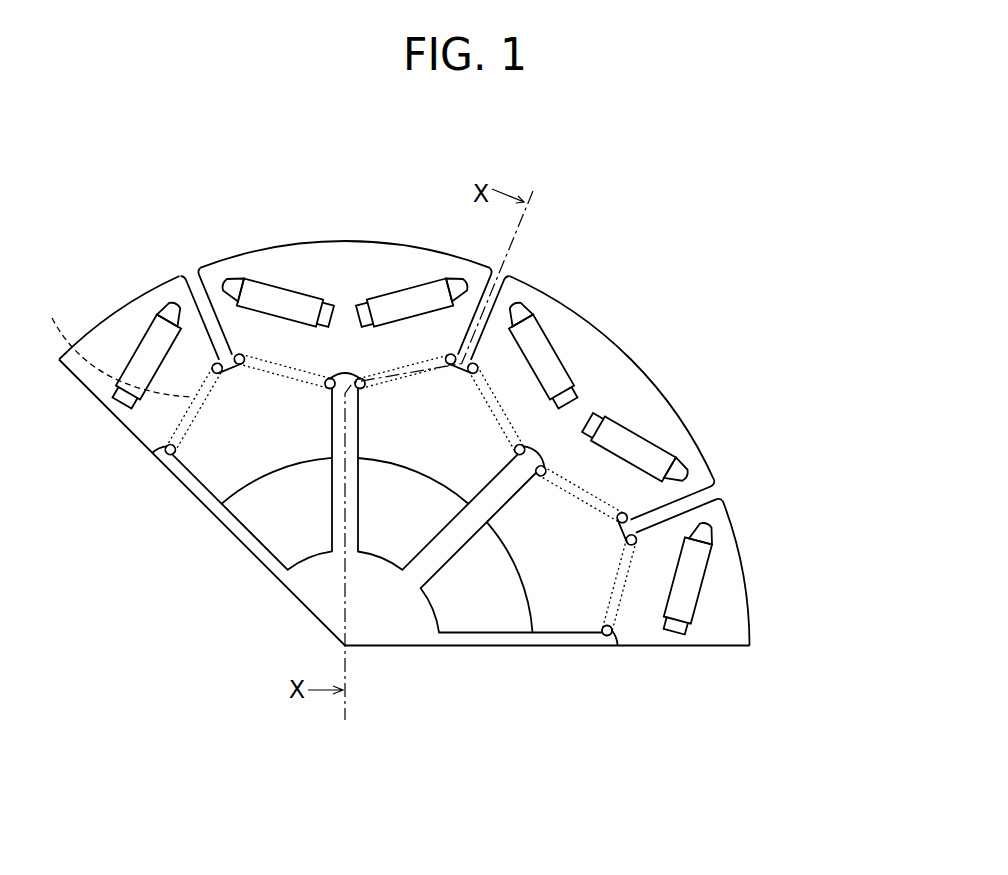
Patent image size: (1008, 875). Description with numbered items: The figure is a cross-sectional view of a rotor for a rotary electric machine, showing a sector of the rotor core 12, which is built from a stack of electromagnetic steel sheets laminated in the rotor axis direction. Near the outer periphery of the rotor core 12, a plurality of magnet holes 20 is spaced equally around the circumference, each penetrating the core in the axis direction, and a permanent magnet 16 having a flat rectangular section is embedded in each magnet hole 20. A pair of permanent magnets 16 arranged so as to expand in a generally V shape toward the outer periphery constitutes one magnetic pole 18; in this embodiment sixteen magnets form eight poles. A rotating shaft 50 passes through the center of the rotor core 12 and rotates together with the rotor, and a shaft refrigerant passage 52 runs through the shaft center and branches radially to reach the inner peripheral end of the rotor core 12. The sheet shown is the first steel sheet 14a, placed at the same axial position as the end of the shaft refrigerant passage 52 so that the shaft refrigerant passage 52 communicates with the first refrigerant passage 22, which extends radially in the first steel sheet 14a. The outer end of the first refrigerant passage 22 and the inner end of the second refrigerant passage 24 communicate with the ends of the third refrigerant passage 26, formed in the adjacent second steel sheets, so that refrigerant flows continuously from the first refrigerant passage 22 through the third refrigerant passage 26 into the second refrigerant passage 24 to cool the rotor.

The rotor core 12 is at (474, 443).
The first steel sheet 14a is at (733, 612).
The permanent magnet 16 is at (402, 394).
The magnetic pole 18 is at (345, 240).
The magnet hole 20 is at (233, 290).
The first refrigerant passage 22 is at (183, 480).
The second refrigerant passage 24 is at (187, 281).
The third refrigerant passage 26 is at (115, 339).
The rotating shaft 50 is at (483, 613).
The shaft refrigerant passage 52 is at (378, 620).